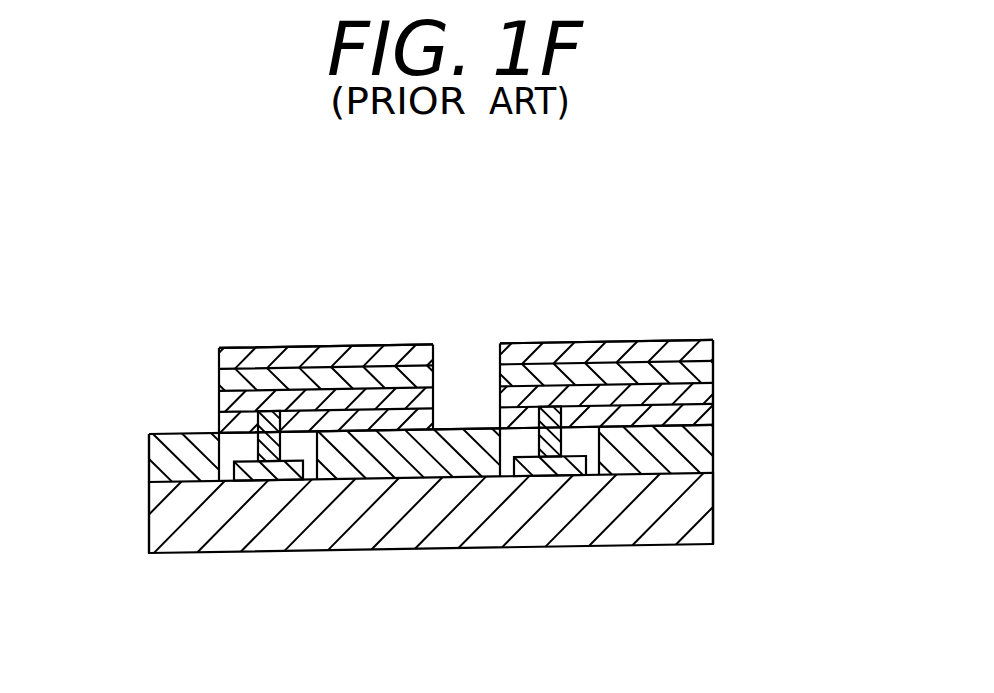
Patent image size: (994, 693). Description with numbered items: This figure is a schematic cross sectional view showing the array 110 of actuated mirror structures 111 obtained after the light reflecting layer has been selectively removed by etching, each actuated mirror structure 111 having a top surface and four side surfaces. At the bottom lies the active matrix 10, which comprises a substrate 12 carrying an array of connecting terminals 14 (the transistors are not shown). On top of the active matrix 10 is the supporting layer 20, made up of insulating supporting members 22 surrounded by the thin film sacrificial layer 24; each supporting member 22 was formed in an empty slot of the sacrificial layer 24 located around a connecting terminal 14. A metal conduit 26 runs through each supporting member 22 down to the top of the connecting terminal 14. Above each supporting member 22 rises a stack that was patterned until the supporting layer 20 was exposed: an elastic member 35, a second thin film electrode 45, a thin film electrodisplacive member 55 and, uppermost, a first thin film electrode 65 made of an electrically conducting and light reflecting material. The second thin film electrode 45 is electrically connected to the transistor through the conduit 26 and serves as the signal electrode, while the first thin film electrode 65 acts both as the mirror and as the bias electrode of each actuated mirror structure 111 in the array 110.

The active matrix 10 is at (137, 463).
The substrate 12 is at (393, 553).
The connecting terminal 14 is at (273, 476).
The supporting layer 20 is at (443, 456).
The supporting member 22 is at (299, 440).
The thin film sacrificial layer 24 is at (693, 447).
The conduit 26 is at (271, 415).
The elastic member 35 is at (692, 423).
The second thin film electrode 45 is at (702, 393).
The thin film electrodisplacive member 55 is at (705, 363).
The first thin film electrode 65 is at (693, 355).
The array of actuated mirror structures 110 is at (752, 182).
The actuated mirror structure 111 is at (430, 235).